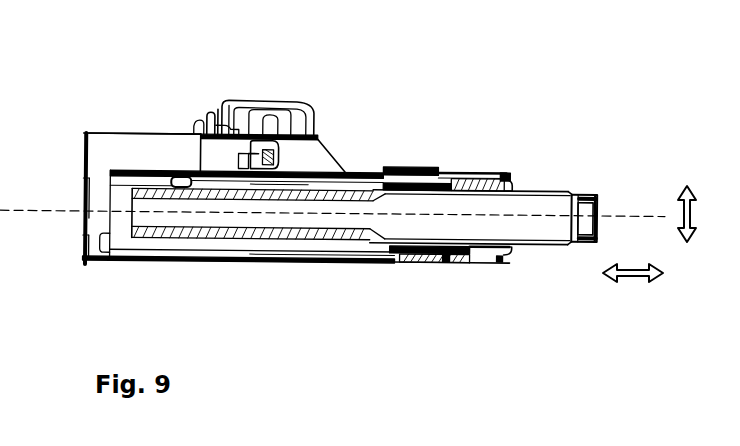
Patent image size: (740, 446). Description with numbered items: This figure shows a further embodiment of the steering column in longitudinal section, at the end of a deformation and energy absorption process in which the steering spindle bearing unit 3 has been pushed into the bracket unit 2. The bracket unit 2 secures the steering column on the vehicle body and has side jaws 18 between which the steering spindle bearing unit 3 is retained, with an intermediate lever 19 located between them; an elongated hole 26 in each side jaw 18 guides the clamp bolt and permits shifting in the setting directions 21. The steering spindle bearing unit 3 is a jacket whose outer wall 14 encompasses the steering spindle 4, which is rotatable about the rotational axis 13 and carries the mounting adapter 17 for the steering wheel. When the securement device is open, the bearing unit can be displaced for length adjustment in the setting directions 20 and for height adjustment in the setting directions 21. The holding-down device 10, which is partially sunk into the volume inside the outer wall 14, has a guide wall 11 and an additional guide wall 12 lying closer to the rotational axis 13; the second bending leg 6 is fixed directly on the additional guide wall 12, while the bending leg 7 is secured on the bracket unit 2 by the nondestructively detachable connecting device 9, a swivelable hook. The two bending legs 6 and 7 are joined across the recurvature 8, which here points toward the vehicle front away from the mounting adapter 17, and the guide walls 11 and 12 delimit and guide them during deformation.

The bracket unit 2 is at (298, 120).
The steering spindle bearing unit 3 is at (457, 170).
The steering spindle 4 is at (540, 190).
The second bending leg 6 is at (182, 197).
The bending leg 7 is at (345, 174).
The recurvature 8 is at (157, 187).
The connecting device 9 is at (205, 113).
The holding-down device 10 is at (110, 168).
The guide wall 11 is at (167, 168).
The additional guide wall 12 is at (109, 196).
The rotational axis 13 is at (625, 216).
The outer wall 14 is at (383, 167).
The mounting adapter 17 is at (588, 198).
The side jaws 18 is at (244, 146).
The intermediate lever 19 is at (93, 145).
The setting directions 20 is at (632, 277).
The setting directions 21 is at (690, 188).
The elongated hole 26 is at (268, 125).